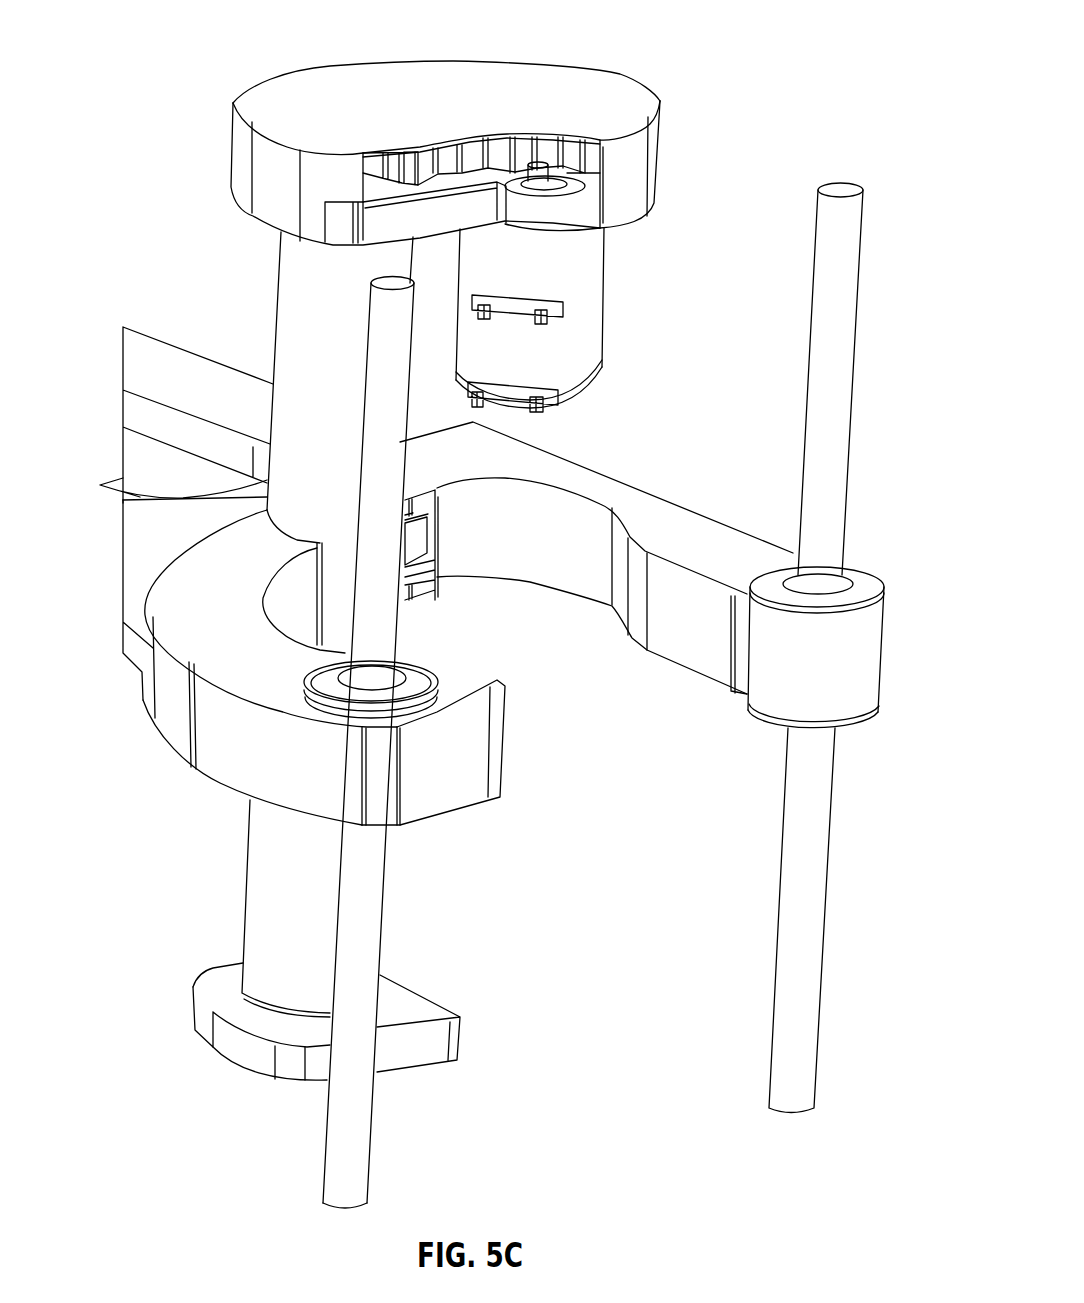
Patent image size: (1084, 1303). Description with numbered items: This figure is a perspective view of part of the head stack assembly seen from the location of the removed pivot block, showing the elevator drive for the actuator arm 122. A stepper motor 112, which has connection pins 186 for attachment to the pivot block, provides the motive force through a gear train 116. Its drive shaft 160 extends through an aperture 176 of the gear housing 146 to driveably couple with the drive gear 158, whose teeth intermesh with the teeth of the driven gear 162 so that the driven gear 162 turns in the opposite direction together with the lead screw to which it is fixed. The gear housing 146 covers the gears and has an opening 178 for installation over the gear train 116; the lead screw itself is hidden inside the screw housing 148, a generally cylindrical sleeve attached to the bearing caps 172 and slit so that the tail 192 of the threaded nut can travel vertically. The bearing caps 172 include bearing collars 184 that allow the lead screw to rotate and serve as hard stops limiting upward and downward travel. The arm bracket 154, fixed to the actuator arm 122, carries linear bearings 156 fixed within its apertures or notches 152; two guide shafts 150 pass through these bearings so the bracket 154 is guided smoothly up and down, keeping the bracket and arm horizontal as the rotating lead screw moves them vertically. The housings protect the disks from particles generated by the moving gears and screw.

The stepper motor 112 is at (596, 260).
The gear train 116 is at (552, 158).
The actuator arm 122 is at (140, 353).
The gear housing 146 is at (275, 88).
The screw housing 148 is at (280, 345).
The guide shaft 150 is at (370, 940).
The aperture or notch 152 is at (440, 708).
The arm bracket 154 is at (703, 523).
The linear bearing 156 is at (422, 680).
The drive gear 158 is at (498, 137).
The drive shaft 160 is at (568, 178).
The driven gear 162 is at (410, 165).
The bearing cap 172 is at (390, 232).
The aperture 176 is at (608, 192).
The opening 178 is at (371, 163).
The bearing collar 184 is at (243, 1040).
The connection pin 186 is at (567, 313).
The tail 192 is at (427, 556).